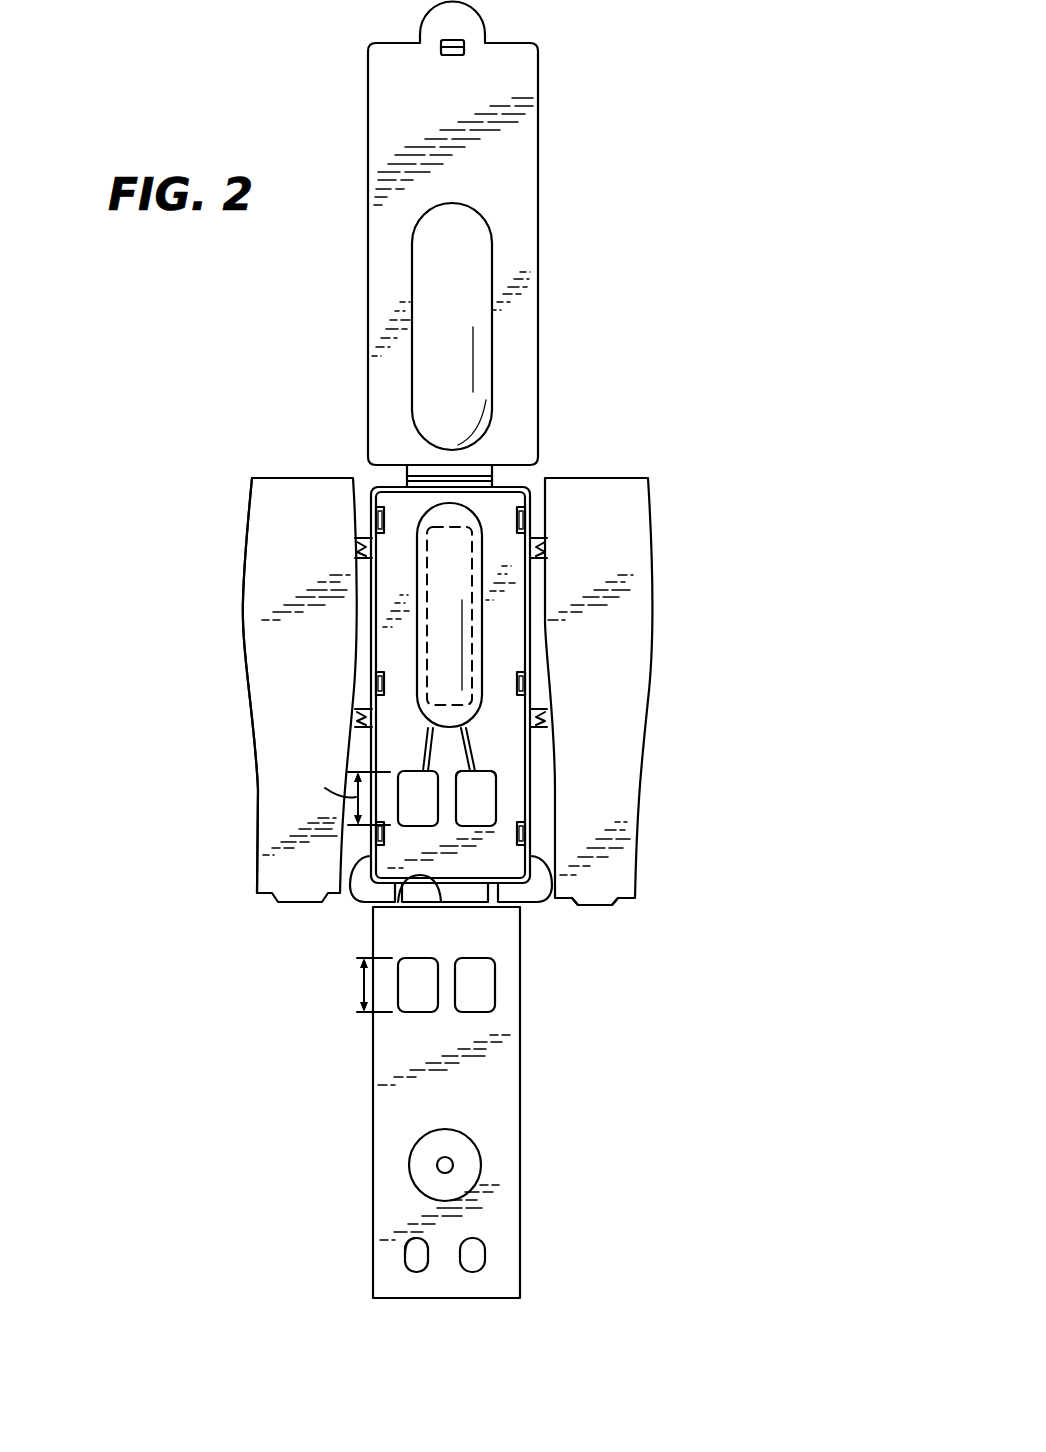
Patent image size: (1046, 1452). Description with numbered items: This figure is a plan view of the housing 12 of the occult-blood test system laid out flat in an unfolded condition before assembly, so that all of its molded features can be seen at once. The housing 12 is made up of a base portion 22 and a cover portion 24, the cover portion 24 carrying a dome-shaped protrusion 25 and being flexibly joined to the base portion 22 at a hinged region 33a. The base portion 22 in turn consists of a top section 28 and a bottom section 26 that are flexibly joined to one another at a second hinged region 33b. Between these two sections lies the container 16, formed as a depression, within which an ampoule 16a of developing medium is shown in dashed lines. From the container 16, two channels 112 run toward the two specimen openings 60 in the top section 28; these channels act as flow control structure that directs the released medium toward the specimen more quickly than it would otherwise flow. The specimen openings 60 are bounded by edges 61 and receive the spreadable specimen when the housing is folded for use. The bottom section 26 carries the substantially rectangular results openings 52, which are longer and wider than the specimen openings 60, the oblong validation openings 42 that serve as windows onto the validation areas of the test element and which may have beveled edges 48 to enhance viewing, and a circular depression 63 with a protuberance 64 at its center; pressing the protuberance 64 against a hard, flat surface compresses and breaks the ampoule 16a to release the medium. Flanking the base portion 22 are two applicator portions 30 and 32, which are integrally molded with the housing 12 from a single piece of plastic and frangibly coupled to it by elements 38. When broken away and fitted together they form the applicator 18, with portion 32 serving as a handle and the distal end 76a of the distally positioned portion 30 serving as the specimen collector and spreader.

The housing 12 is at (582, 270).
The cover portion 24 is at (540, 205).
The dome-shaped protrusion 25 is at (458, 325).
The top section 28 is at (531, 445).
The hinged region 33a is at (468, 477).
The base portion 22 is at (549, 896).
The hinged region 33b is at (418, 873).
The container 16 is at (482, 552).
The ampoule 16a is at (430, 585).
The channel 112 is at (475, 742).
The specimen opening 60 is at (478, 805).
The edge 61 is at (480, 780).
The applicator 18 is at (235, 589).
The applicator portion 32 is at (246, 645).
The applicator portion 30 is at (640, 763).
The distal end 76a is at (604, 906).
The element 38 is at (357, 720).
The bottom section 26 is at (521, 1082).
The results opening 52 is at (497, 985).
The circular depression 63 is at (470, 1165).
The protuberance 64 is at (443, 1165).
The validation opening 42 is at (412, 1263).
The beveled edge 48 is at (411, 1240).